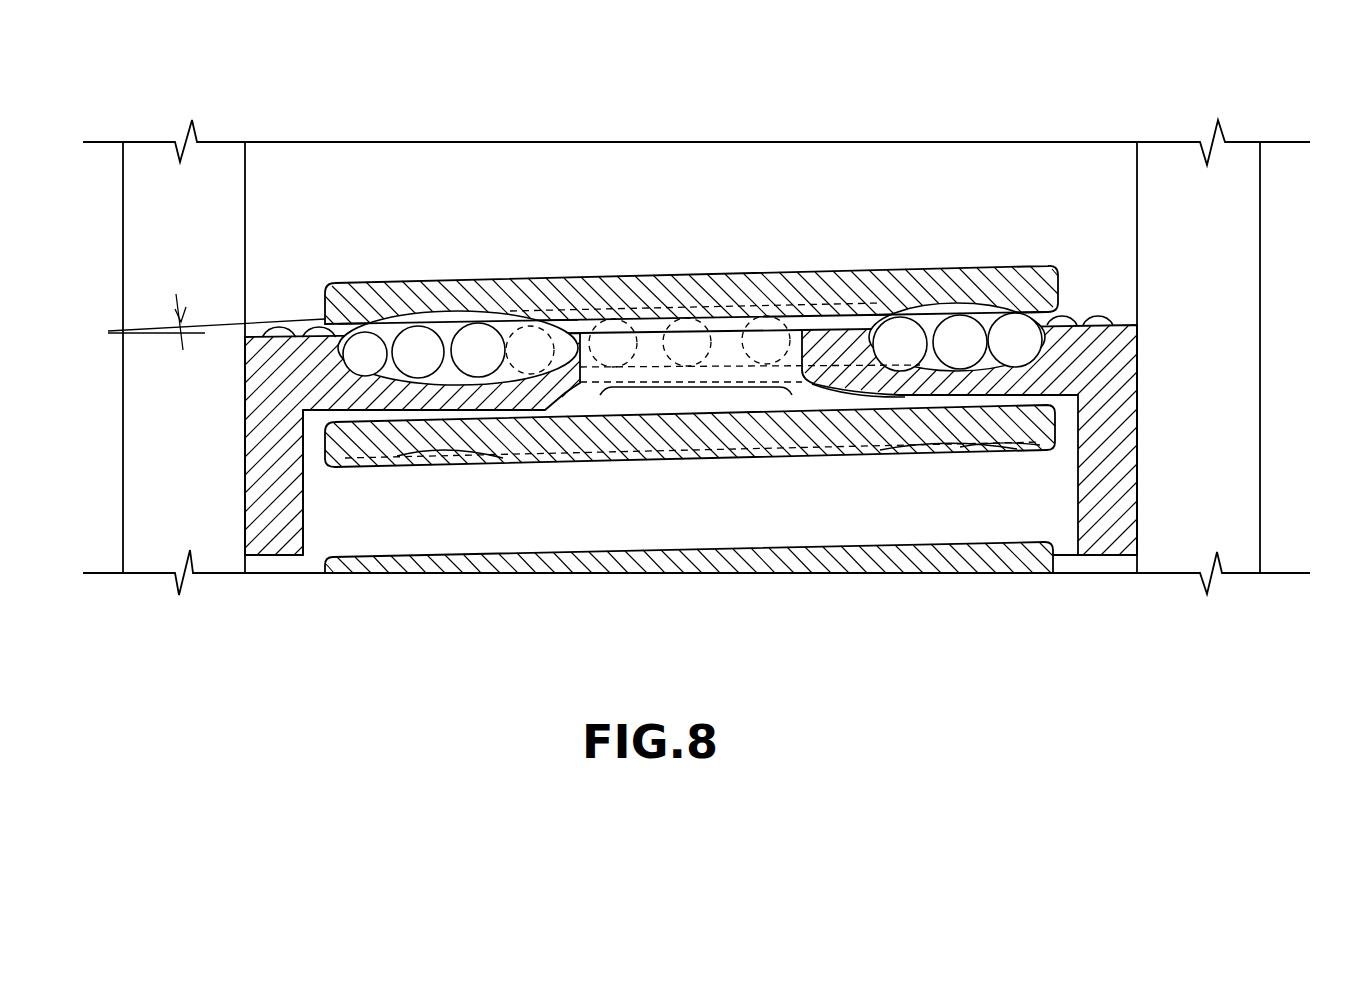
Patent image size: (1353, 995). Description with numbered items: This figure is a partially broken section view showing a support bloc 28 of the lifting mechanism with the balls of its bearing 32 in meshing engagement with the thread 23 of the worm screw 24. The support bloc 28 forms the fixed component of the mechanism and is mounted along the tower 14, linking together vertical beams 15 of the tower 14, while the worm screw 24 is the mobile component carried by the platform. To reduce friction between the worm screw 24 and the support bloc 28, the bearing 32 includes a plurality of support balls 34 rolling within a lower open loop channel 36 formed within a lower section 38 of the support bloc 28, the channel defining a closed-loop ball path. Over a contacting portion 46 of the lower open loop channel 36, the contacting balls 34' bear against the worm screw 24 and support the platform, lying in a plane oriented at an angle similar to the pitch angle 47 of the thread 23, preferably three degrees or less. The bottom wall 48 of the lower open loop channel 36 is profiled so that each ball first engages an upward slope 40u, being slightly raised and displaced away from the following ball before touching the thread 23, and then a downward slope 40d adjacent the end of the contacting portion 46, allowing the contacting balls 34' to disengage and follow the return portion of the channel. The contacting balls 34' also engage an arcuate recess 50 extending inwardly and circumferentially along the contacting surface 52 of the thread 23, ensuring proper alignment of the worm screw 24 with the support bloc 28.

The tower 14 is at (232, 138).
The vertical beams 15 is at (127, 210).
The thread 23 is at (850, 268).
The worm screw 24 is at (1022, 567).
The support bloc 28 is at (1107, 557).
The bearing 32 is at (302, 293).
The support balls 34 is at (687, 283).
The contacting balls 34' is at (648, 291).
The lower open loop channel 36 is at (990, 322).
The lower section 38 is at (303, 517).
The upward slope 40u is at (540, 418).
The downward slope 40d is at (850, 395).
The contacting portion 46 is at (690, 395).
The pitch angle 47 is at (193, 330).
The bottom wall 48 is at (458, 455).
The arcuate recess 50 is at (490, 455).
The contacting surface 52 is at (998, 453).